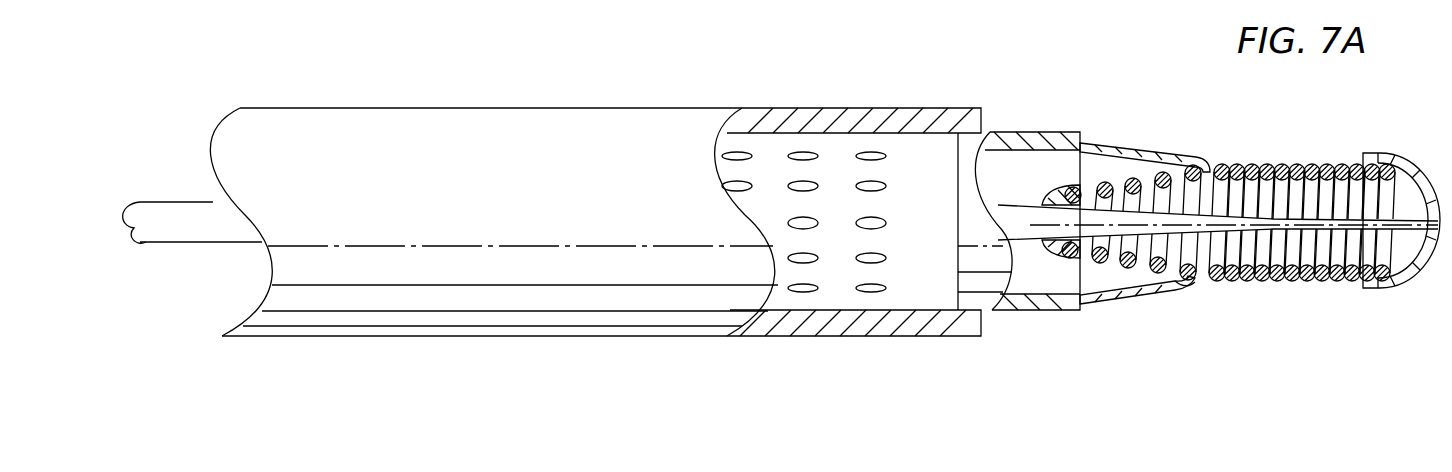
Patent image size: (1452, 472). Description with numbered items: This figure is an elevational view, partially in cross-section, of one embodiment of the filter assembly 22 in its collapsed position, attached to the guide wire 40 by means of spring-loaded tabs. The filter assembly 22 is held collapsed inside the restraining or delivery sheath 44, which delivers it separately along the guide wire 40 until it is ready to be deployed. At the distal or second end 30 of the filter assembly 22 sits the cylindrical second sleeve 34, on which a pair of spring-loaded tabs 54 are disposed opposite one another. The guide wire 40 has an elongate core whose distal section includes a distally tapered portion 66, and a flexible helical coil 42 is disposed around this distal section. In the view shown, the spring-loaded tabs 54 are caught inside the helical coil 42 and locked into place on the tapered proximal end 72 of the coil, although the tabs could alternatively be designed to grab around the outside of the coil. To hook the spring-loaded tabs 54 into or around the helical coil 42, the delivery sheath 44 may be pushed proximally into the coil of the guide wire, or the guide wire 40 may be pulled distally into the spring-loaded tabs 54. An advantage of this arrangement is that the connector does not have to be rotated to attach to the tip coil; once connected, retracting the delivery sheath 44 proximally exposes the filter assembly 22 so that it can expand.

The delivery sheath 44 is at (423, 116).
The guide wire 40 is at (175, 219).
The second end 30 is at (958, 138).
The filter assembly 22 is at (772, 157).
The second sleeve 34 is at (990, 137).
The distally tapered portion 66 is at (1027, 238).
The spring-loaded tabs 54 is at (1118, 147).
The tapered proximal end 72 is at (1177, 283).
The helical coil 42 is at (1268, 165).